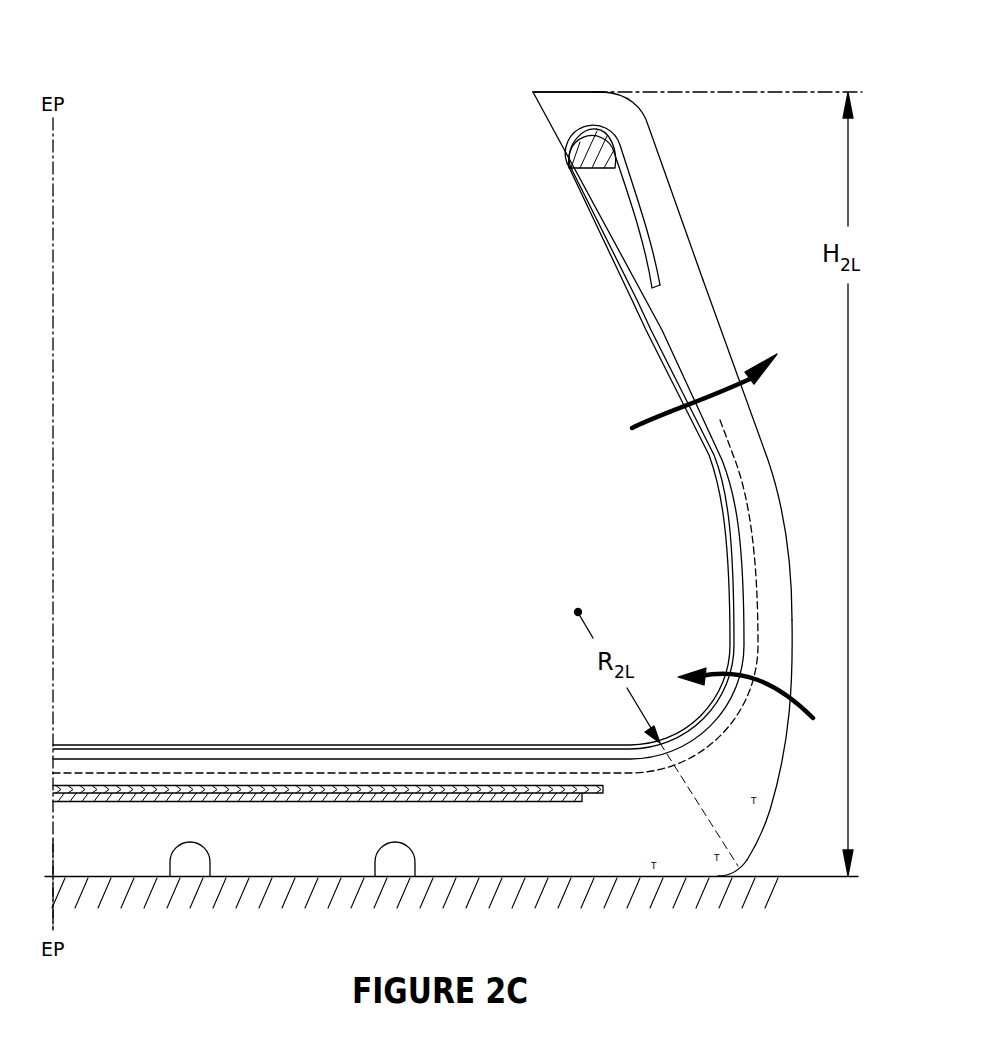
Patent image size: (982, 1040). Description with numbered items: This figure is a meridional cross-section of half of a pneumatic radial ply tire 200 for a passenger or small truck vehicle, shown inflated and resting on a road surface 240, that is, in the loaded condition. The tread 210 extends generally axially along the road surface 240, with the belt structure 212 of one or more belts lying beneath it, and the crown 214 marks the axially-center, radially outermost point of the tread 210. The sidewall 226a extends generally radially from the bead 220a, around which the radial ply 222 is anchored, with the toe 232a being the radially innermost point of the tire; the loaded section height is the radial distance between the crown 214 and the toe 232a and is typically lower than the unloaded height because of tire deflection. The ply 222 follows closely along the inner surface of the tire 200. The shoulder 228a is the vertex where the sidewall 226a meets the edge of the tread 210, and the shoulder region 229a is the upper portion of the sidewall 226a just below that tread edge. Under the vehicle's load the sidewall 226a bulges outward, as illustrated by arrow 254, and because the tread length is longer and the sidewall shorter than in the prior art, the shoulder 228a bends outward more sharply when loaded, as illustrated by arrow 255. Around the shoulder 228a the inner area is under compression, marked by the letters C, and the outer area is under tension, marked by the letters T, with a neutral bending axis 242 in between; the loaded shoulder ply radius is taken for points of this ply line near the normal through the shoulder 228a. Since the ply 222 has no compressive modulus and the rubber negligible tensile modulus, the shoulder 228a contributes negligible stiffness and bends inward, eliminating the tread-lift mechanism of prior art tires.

The pneumatic radial ply tire 200 is at (609, 81).
The toe 232a is at (533, 92).
The bead 220a is at (578, 137).
The radial ply 222 is at (150, 746).
The sidewall 226a is at (796, 592).
The shoulder region 229a is at (828, 782).
The shoulder 228a is at (739, 866).
The neutral bending axis 242 is at (212, 771).
The belt structure 212 is at (318, 788).
The arrow 254 is at (653, 426).
The arrow 255 is at (755, 680).
The road surface 240 is at (763, 888).
The tread 210 is at (270, 862).
The crown 214 is at (60, 860).